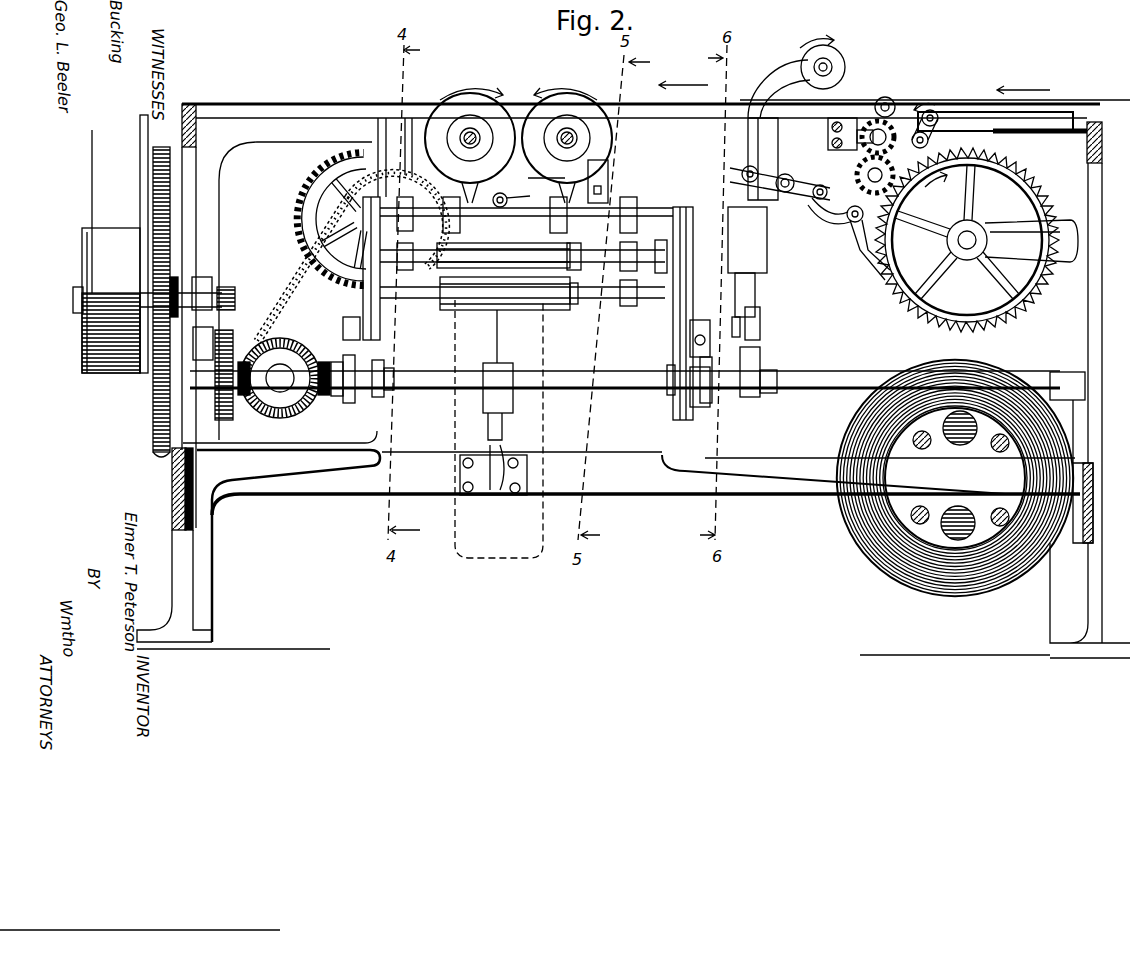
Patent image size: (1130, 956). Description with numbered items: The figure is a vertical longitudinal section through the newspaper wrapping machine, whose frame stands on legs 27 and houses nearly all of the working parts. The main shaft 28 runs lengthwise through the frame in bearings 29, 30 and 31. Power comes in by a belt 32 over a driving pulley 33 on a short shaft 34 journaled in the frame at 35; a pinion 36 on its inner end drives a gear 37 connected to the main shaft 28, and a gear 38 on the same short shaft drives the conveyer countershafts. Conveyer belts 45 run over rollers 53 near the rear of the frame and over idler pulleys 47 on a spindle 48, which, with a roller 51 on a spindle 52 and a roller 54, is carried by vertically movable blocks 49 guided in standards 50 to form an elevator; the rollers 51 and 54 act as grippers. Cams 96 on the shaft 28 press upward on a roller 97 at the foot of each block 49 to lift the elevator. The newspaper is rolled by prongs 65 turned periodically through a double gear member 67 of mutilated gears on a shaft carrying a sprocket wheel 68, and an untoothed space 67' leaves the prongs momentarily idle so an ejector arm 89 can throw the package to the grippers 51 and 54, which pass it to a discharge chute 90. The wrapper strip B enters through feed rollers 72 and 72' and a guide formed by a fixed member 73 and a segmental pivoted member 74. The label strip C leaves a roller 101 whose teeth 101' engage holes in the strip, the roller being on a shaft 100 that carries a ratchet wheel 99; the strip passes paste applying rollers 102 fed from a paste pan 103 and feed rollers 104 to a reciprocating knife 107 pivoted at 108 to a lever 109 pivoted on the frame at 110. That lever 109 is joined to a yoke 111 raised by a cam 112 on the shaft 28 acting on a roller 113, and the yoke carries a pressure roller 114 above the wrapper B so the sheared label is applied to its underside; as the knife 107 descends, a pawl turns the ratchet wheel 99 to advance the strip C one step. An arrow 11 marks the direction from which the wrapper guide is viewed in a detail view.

The view arrow 11 is at (300, 412).
The legs 27 is at (197, 573).
The main shaft 28 is at (808, 384).
The bearing 29 is at (187, 442).
The bearing 30 is at (390, 372).
The bearing 31 is at (1068, 378).
The belt 32 is at (104, 200).
The driving pulley 33 is at (88, 330).
The short shaft 34 is at (73, 302).
The journal in frame 35 is at (200, 298).
The pinion 36 is at (232, 285).
The gear 37 is at (238, 345).
The gear 38 is at (152, 407).
The conveyer belts 45 is at (540, 280).
The idler pulleys 47 is at (628, 210).
The spindle 48 is at (660, 218).
The vertically movable blocks 49 is at (345, 213).
The standards 50 is at (378, 334).
The roller 51 is at (512, 280).
The spindle 52 is at (576, 259).
The rollers 53 is at (614, 296).
The roller 54 is at (483, 324).
The fingers or prongs 65 is at (508, 252).
The double gear member 67 is at (319, 219).
The untoothed space 67' is at (312, 164).
The sprocket wheel 68 is at (393, 160).
The feed roller 72 is at (567, 126).
The feed roller 72' is at (470, 126).
The fixed member 73 is at (540, 186).
The segmental pivoted member 74 is at (511, 191).
The ejector arm 89 is at (500, 327).
The discharge chute 90 is at (503, 552).
The cams 96 is at (335, 410).
The roller 97 is at (350, 316).
The ratchet wheel 99 is at (930, 306).
The shaft 100 is at (965, 240).
The roller 101 is at (861, 248).
The teeth 101' is at (877, 304).
The paste applying rollers 102 is at (932, 108).
The paste pan 103 is at (990, 110).
The feed rollers 104 is at (884, 98).
The vertically reciprocating knife 107 is at (826, 150).
The pivot 108 is at (832, 218).
The lever 109 is at (775, 210).
The pivot 110 is at (820, 188).
The yoke 111 is at (768, 98).
The cam 112 is at (759, 363).
The roller 113 is at (760, 310).
The pressure roller 114 is at (832, 58).
The strip of paper B is at (1107, 91).
The label strip C is at (955, 125).